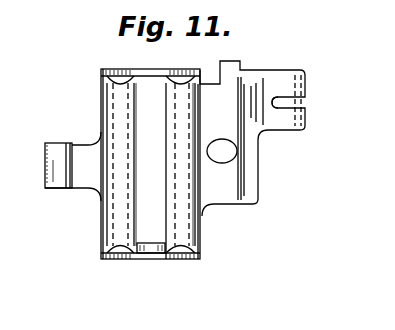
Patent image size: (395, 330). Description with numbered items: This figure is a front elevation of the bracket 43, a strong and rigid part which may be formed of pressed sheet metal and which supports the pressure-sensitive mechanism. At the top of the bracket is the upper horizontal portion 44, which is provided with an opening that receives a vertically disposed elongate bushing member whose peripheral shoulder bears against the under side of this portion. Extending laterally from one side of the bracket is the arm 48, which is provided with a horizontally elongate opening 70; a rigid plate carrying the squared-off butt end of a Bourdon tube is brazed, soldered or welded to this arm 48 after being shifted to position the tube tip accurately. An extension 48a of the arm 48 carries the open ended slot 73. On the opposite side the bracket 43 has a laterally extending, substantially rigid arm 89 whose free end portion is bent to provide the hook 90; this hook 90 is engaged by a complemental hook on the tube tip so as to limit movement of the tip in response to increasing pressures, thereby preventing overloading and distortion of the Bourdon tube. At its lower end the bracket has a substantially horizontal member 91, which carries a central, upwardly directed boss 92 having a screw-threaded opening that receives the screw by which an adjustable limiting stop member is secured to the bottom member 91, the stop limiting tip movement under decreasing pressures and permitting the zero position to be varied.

The bracket 43 is at (323, 88).
The upper horizontal portion 44 is at (136, 70).
The laterally extending arm 48 is at (220, 197).
The extension of the arm 48a is at (273, 78).
The horizontally elongate opening 70 is at (228, 152).
The open ended slot 73 is at (298, 103).
The laterally extending arm 89 is at (84, 150).
The hook 90 is at (56, 188).
The substantially horizontal member 91 is at (167, 258).
The boss 92 is at (152, 248).